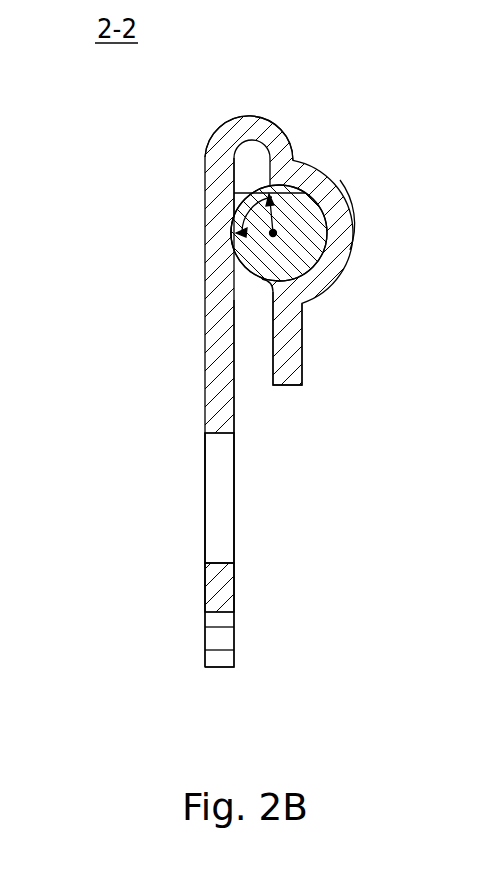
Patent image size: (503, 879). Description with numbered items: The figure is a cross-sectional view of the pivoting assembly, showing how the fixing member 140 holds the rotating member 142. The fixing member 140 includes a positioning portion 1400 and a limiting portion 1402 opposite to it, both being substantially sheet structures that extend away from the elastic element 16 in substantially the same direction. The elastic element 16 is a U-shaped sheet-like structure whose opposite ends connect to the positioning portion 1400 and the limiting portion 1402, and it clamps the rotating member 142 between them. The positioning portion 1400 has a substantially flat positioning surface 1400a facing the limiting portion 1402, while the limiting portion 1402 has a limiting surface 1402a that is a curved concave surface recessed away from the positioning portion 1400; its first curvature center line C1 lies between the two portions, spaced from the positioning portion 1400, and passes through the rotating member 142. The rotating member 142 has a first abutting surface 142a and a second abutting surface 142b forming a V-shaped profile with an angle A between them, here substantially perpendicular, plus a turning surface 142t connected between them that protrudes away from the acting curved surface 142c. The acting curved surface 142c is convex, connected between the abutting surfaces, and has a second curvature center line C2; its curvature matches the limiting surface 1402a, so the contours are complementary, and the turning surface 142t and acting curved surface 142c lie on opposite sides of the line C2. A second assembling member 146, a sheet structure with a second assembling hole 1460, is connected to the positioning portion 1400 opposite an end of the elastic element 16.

The elastic element 16 is at (256, 113).
The fixing member 140 is at (98, 642).
The positioning portion 1400 is at (218, 410).
The positioning surface 1400a is at (232, 383).
The limiting portion 1402 is at (333, 230).
The limiting surface 1402a is at (320, 285).
The rotating member 142 is at (324, 240).
The first abutting surface 142a is at (232, 246).
The second abutting surface 142b is at (233, 158).
The acting curved surface 142c is at (346, 197).
The turning surface 142t is at (234, 193).
The second assembling member 146 is at (218, 592).
The second assembling hole 1460 is at (214, 516).
The angle A is at (238, 222).
The first curvature center line C1 is at (275, 197).
The second curvature center line C2 is at (276, 230).